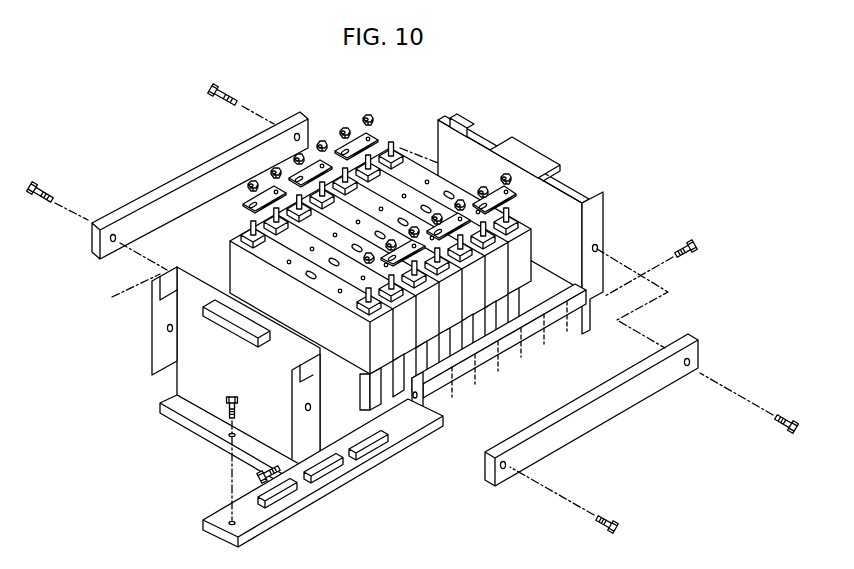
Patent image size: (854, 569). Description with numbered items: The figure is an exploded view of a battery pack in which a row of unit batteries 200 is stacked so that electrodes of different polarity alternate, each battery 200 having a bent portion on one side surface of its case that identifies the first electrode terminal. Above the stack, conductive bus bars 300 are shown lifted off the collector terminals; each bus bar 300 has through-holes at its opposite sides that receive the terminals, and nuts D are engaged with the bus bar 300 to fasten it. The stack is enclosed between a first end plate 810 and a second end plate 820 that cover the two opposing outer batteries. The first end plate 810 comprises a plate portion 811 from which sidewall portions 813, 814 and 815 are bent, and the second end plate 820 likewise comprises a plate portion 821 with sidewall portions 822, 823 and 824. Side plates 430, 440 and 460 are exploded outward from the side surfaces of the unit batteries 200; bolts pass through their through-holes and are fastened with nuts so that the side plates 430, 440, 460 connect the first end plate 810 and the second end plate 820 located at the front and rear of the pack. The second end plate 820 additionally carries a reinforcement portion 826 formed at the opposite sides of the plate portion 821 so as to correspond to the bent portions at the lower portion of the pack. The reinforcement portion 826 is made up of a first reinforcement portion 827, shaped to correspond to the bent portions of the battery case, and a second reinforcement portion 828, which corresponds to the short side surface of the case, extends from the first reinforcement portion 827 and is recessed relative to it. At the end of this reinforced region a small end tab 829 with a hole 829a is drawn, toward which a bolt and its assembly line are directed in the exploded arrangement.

The unit battery 200 is at (402, 152).
The bus bar 300 is at (357, 140).
The nut D is at (368, 119).
The side plate 430 is at (97, 245).
The side plate 440 is at (693, 353).
The side plate 460 is at (313, 490).
The first end plate 810 is at (261, 390).
The plate portion 811 is at (205, 383).
The sidewall portion 813 is at (165, 355).
The sidewall portion 814 is at (315, 430).
The sidewall portion 815 is at (208, 423).
The second end plate 820 is at (556, 201).
The plate portion 821 is at (563, 190).
The sidewall portion 822 is at (528, 158).
The sidewall portion 823 is at (460, 118).
The sidewall portion 824 is at (600, 213).
The reinforcement portion 826 is at (542, 330).
The first reinforcement portion 827 is at (448, 375).
The second reinforcement portion 828 is at (518, 386).
The end tab 829 is at (450, 430).
The hole in end tab 829a is at (417, 397).